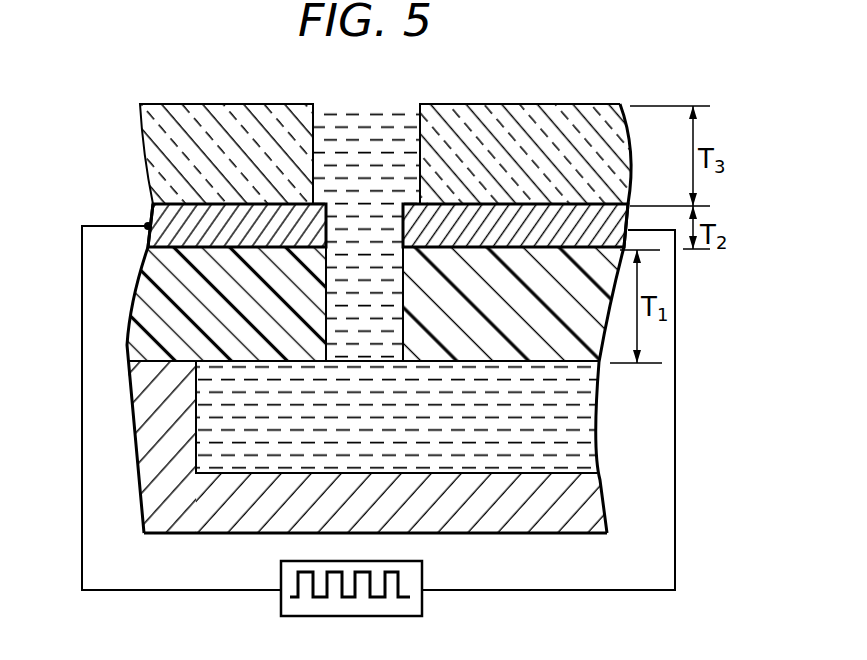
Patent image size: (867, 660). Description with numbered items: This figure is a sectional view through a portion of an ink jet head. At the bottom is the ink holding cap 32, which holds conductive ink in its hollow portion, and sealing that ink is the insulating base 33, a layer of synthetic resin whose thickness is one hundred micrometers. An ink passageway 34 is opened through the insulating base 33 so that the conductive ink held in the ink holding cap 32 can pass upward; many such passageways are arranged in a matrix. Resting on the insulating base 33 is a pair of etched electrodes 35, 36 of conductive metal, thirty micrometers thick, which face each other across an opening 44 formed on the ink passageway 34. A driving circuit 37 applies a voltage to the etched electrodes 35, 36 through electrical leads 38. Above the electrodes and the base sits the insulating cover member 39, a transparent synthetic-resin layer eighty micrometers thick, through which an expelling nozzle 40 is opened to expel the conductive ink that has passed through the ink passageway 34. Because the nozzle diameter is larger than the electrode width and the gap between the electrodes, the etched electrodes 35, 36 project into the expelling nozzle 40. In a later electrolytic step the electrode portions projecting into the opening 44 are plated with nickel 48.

The ink holding cap 32 is at (590, 492).
The insulating base 33 is at (138, 292).
The ink passageway 34 is at (373, 280).
The etched electrode 35 is at (148, 215).
The etched electrode 36 is at (633, 207).
The driving circuit 37 is at (423, 605).
The electrical leads 38 is at (675, 468).
The insulating cover member 39 is at (153, 142).
The expelling nozzle 40 is at (358, 114).
The opening 44 is at (353, 218).
The nickel 48 is at (417, 103).